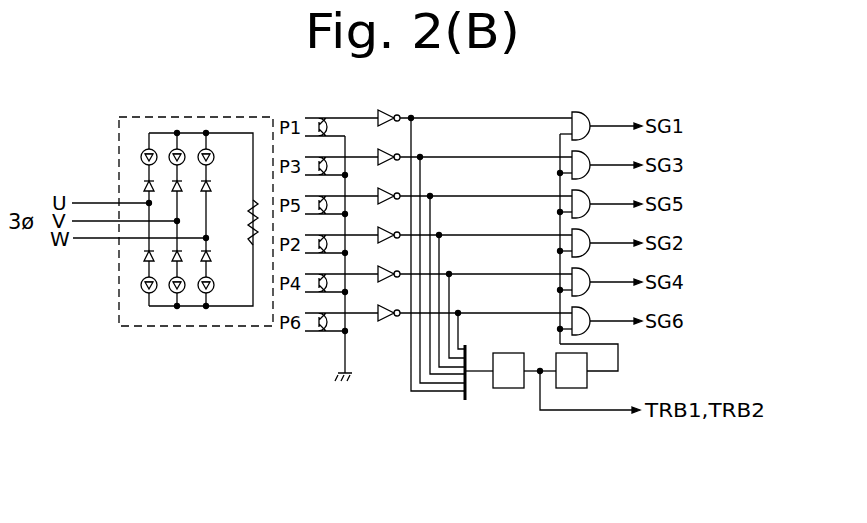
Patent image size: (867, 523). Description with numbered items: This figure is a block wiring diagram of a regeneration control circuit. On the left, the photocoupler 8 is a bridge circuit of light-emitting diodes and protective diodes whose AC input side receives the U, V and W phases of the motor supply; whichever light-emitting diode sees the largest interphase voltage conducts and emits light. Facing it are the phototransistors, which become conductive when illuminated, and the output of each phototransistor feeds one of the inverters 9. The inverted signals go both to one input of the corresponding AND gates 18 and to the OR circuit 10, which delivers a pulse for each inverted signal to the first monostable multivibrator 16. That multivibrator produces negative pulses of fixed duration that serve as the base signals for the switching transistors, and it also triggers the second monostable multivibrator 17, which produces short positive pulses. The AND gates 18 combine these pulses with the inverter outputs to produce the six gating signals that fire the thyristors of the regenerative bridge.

The photocoupler 8 is at (182, 117).
The inverters 9 is at (387, 117).
The OR circuit 10 is at (463, 406).
The first monostable multivibrator 16 is at (511, 391).
The second monostable multivibrator 17 is at (578, 391).
The AND gates 18 is at (580, 115).